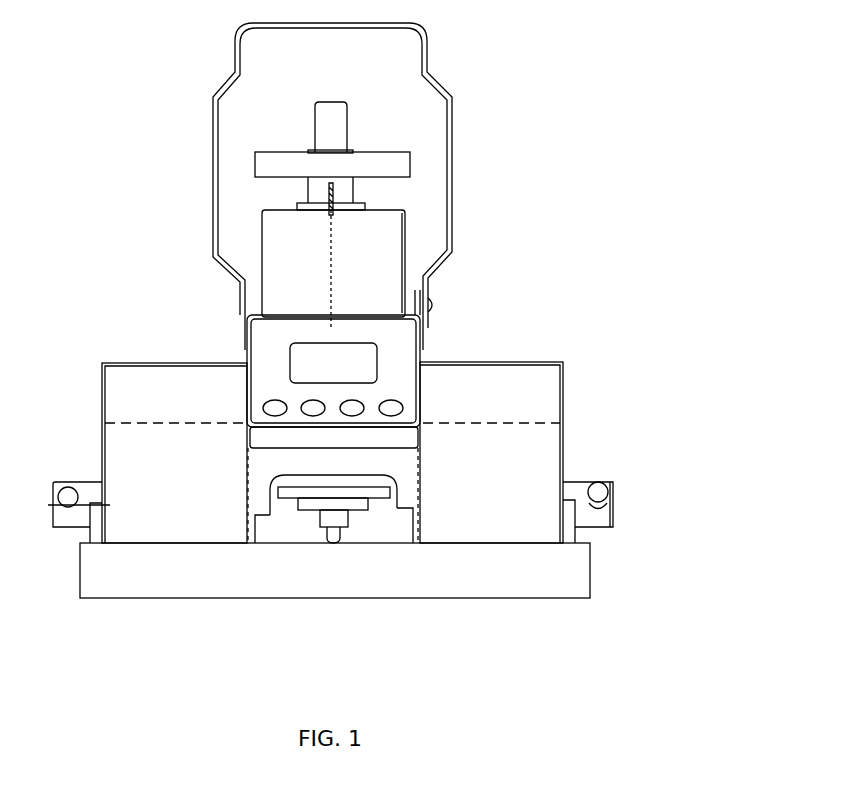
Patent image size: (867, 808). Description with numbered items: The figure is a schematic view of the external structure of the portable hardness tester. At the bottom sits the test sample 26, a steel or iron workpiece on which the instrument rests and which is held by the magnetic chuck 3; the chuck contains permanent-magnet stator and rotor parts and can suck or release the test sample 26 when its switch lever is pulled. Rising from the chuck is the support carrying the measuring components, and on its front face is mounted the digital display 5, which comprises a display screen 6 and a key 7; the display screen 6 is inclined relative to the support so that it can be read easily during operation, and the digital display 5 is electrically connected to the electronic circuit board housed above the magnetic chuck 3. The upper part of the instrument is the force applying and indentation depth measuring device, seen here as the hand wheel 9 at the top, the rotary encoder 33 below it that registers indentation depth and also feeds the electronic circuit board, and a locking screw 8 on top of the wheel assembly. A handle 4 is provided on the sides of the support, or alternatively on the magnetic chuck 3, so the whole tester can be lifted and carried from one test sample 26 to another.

The magnetic chuck 3 is at (122, 502).
The handle 4 is at (213, 183).
The digital display 5 is at (267, 330).
The display screen 6 is at (302, 357).
The key 7 is at (275, 405).
The locking screw 8 is at (337, 127).
The hand wheel 9 is at (392, 167).
The test sample 26 is at (332, 575).
The rotary encoder 33 is at (383, 287).